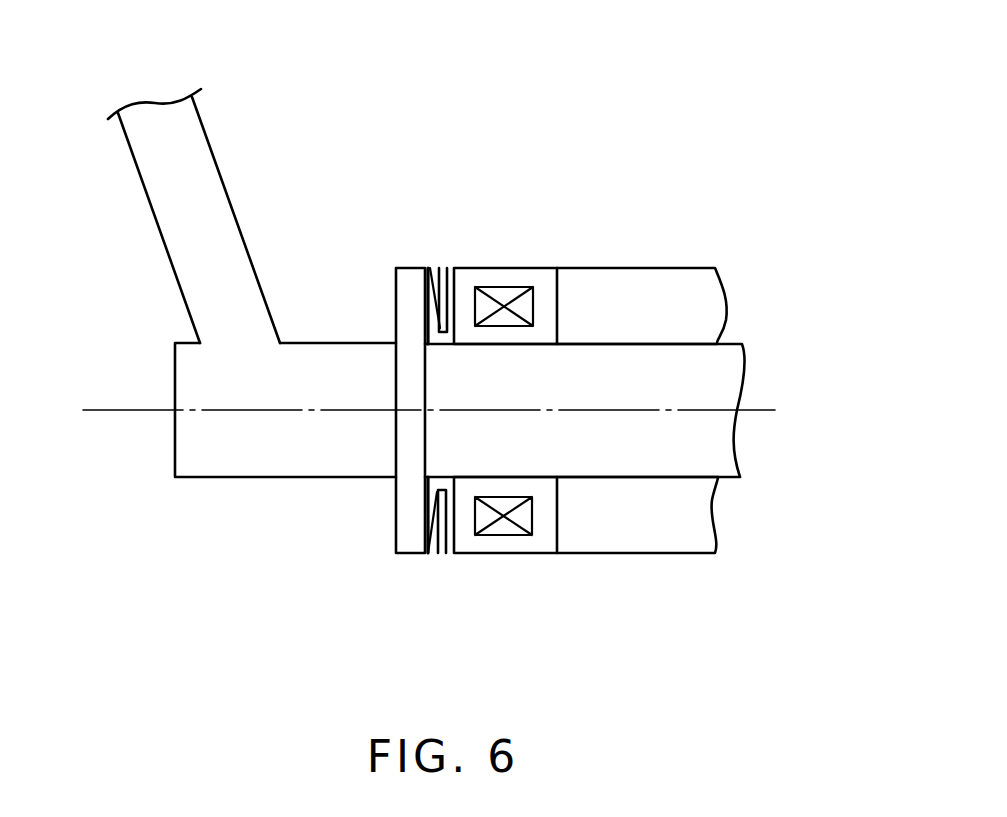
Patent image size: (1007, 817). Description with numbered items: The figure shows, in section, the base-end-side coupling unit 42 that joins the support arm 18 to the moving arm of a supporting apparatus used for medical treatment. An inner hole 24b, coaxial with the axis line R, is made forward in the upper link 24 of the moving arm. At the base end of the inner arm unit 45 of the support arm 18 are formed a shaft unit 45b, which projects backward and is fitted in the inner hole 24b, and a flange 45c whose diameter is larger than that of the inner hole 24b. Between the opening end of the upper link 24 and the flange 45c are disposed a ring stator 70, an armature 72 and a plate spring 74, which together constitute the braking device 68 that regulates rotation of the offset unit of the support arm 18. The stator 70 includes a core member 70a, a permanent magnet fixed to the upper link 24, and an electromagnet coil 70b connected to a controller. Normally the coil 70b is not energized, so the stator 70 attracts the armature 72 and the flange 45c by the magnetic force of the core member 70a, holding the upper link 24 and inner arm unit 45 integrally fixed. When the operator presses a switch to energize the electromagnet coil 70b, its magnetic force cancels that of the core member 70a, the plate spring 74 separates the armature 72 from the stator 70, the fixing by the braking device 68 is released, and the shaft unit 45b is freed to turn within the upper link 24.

The support arm 18 is at (159, 88).
The upper link 24 is at (684, 381).
The inner hole 24b is at (683, 477).
The base-end-side coupling unit 42 is at (474, 408).
The inner arm unit 45 is at (464, 243).
The shaft unit 45b is at (723, 372).
The flange 45c is at (397, 266).
The braking device 68 is at (418, 342).
The ring stator 70 is at (527, 360).
The core member 70a is at (490, 275).
The electromagnet coil 70b is at (495, 211).
The armature 72 is at (460, 371).
The plate spring 74 is at (428, 266).
The axis line R is at (113, 413).